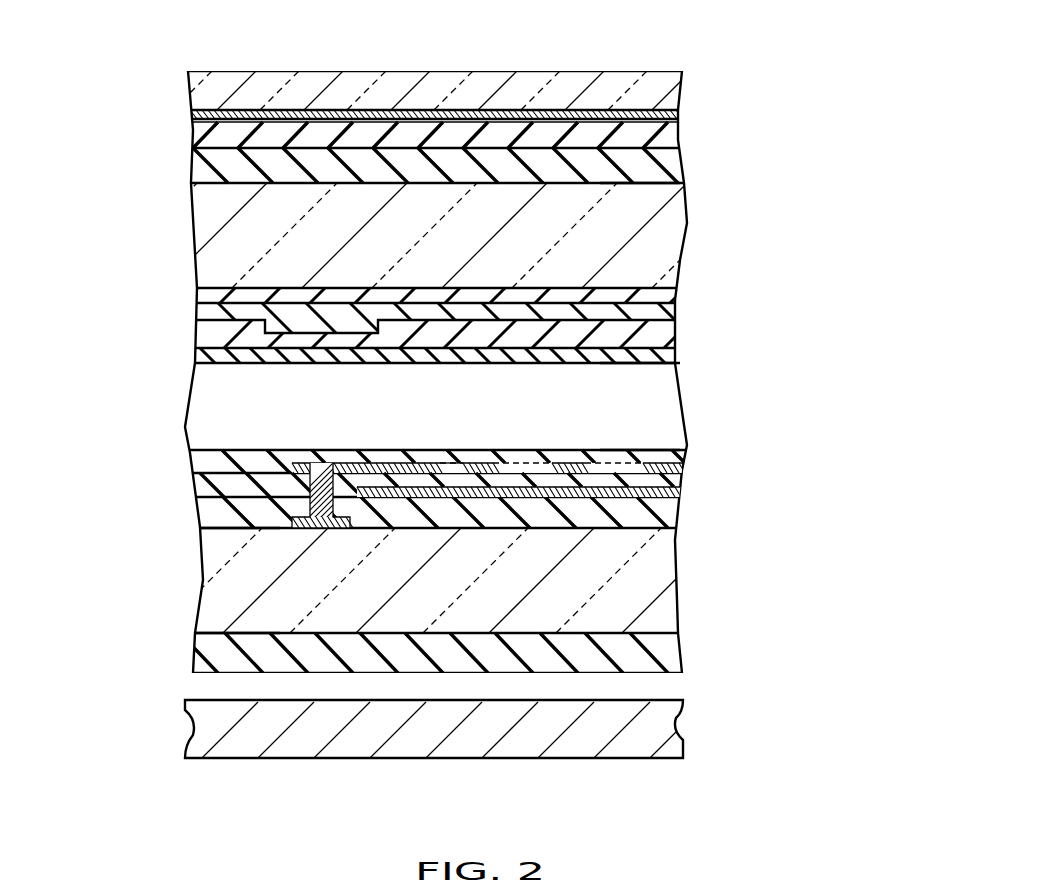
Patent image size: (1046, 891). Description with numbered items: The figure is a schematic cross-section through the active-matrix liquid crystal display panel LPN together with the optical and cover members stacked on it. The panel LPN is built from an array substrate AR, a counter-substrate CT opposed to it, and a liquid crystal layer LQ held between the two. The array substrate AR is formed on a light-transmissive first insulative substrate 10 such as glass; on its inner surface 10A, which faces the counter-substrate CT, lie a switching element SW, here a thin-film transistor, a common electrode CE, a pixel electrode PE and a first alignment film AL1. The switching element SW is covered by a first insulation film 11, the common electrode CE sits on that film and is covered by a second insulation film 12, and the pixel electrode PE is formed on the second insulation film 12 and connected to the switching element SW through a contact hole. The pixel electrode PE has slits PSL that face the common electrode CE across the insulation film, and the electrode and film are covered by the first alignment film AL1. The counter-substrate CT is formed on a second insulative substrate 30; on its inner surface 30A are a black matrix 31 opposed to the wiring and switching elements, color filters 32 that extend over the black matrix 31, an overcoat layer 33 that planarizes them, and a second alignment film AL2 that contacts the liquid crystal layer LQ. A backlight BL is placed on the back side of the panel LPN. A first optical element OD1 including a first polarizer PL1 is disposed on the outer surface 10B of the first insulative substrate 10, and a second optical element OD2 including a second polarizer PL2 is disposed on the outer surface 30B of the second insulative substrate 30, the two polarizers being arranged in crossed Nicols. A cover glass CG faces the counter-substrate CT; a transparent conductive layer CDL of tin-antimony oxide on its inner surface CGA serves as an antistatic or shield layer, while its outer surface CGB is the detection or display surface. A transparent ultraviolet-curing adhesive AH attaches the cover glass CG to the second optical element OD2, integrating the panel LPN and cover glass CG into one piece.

The outer surface of cover glass CGB is at (408, 99).
The cover glass CG is at (682, 82).
The conductive layer CDL is at (193, 115).
The inner surface of cover glass CGA is at (236, 119).
The adhesive AH is at (673, 138).
The second optical element OD2 is at (386, 165).
The second polarizer PL2 is at (192, 156).
The outer surface of second insulative substrate 30B is at (658, 173).
The counter-substrate CT is at (459, 268).
The second insulative substrate 30 is at (680, 246).
The black matrix 31 is at (265, 301).
The color filters 32 is at (195, 306).
The inner surface of second insulative substrate 30A is at (459, 324).
The overcoat layer 33 is at (656, 338).
The second alignment film AL2 is at (673, 359).
The liquid crystal display panel LPN is at (479, 426).
The liquid crystal layer LQ is at (663, 403).
The first alignment film AL1 is at (667, 450).
The pixel electrode PE is at (522, 433).
The slits PSL is at (537, 450).
The second insulation film 12 is at (468, 444).
The common electrode CE is at (683, 493).
The first insulation film 11 is at (467, 513).
The switching element SW is at (327, 529).
The first insulative substrate 10 is at (660, 575).
The inner surface of first insulative substrate 10A is at (214, 514).
The outer surface of first insulative substrate 10B is at (223, 645).
The array substrate AR is at (442, 546).
The first optical element OD1 is at (503, 656).
The first polarizer PL1 is at (668, 662).
The backlight BL is at (675, 733).